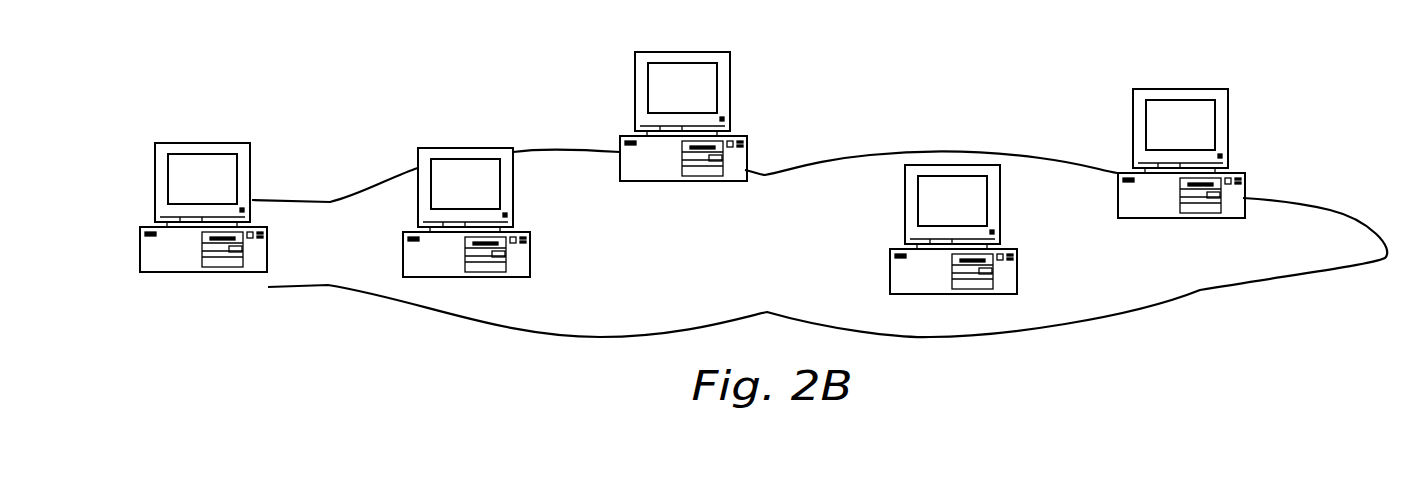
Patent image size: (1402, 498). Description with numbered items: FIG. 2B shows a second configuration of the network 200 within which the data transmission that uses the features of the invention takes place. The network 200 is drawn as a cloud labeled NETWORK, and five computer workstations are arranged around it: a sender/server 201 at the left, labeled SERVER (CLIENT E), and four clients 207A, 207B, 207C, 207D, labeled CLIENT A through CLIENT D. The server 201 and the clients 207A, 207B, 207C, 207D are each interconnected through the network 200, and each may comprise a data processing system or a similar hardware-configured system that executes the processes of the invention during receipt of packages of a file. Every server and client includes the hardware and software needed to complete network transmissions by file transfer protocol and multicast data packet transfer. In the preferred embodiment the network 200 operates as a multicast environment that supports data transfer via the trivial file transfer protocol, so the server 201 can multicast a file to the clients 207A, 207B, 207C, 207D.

The network 200 is at (1329, 88).
The sender/server 201 is at (200, 143).
The client 207A is at (730, 80).
The client 207B is at (466, 121).
The client 207C is at (1185, 89).
The client 207D is at (1018, 268).